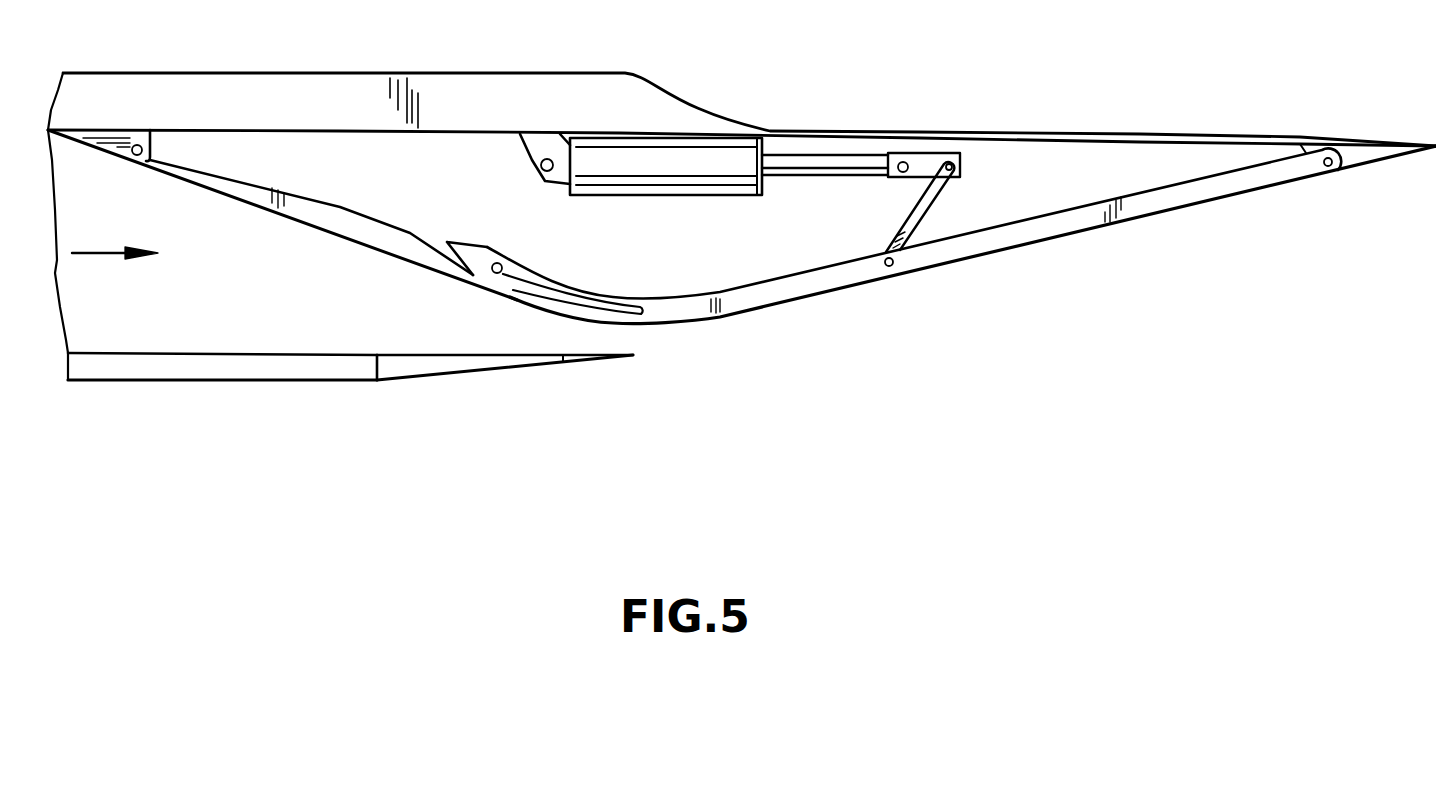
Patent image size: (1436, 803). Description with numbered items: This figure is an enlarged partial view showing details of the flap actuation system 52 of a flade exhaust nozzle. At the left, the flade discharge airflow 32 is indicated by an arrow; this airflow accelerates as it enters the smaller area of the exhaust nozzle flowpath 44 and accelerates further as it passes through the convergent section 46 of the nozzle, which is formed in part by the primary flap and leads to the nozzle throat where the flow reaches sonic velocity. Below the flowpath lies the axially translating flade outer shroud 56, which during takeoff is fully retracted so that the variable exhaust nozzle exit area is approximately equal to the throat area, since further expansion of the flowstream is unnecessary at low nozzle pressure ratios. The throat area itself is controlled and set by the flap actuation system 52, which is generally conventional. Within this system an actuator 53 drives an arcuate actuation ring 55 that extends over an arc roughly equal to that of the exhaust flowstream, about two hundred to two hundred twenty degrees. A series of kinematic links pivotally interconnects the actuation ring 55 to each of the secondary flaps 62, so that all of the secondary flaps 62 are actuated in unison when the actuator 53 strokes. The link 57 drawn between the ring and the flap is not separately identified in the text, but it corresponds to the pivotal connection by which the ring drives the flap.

The flade discharge airflow 32 is at (100, 252).
The exhaust nozzle flowpath 44 is at (150, 329).
The convergent section 46 is at (402, 327).
The flap actuation system 52 is at (794, 115).
The actuator 53 is at (700, 178).
The arcuate actuation ring 55 is at (920, 163).
The flade outer shroud 56 is at (535, 368).
The link 57 is at (915, 208).
The secondary flaps 62 is at (1013, 242).